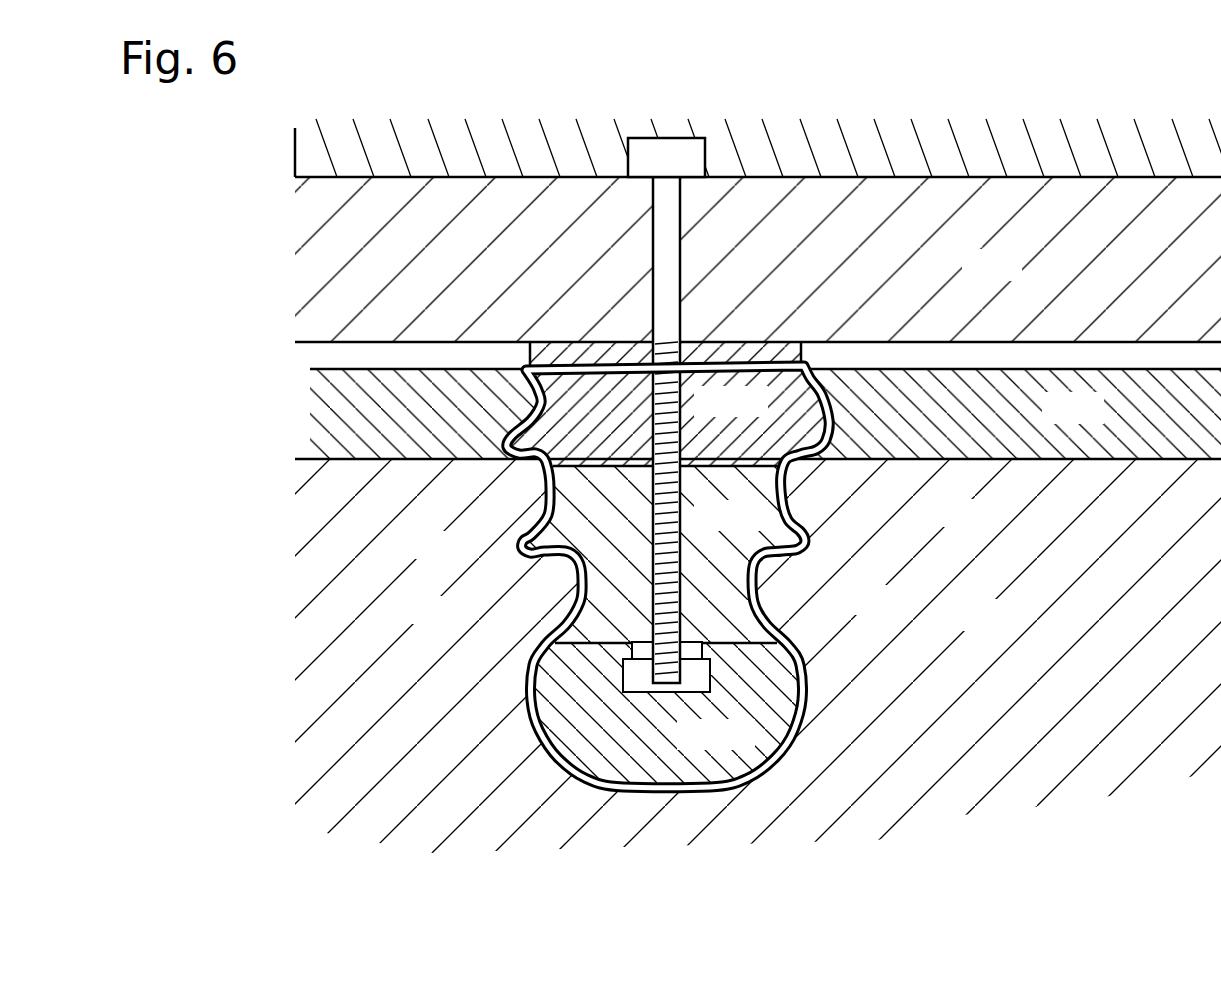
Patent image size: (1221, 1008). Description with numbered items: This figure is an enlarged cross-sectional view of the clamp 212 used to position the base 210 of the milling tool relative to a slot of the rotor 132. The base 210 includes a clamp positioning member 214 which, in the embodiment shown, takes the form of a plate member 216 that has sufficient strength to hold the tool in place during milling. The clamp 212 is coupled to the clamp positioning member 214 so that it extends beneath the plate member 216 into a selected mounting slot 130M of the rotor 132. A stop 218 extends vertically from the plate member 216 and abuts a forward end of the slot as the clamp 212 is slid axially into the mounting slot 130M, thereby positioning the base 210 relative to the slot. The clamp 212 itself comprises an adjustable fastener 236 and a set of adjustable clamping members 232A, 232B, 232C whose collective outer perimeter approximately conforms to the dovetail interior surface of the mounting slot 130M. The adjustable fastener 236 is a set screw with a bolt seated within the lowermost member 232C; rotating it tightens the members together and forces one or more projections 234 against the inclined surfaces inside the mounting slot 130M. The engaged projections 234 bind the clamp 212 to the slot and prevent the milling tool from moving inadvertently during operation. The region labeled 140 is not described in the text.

The base 210 is at (275, 143).
The clamp positioning member 214 is at (264, 266).
The plate member 216 is at (968, 278).
The stop 218 is at (1097, 423).
The adjustable fastener 236 is at (680, 165).
The adjustable clamping member 232A is at (700, 415).
The adjustable clamping member 232B is at (700, 529).
The lowermost adjustable clamping member 232C is at (748, 748).
The projections 234 is at (790, 526).
The clamp 212 is at (513, 563).
The mounting slot 130M is at (777, 588).
The rotor 132 is at (952, 629).
The cavity surface 140 is at (820, 700).